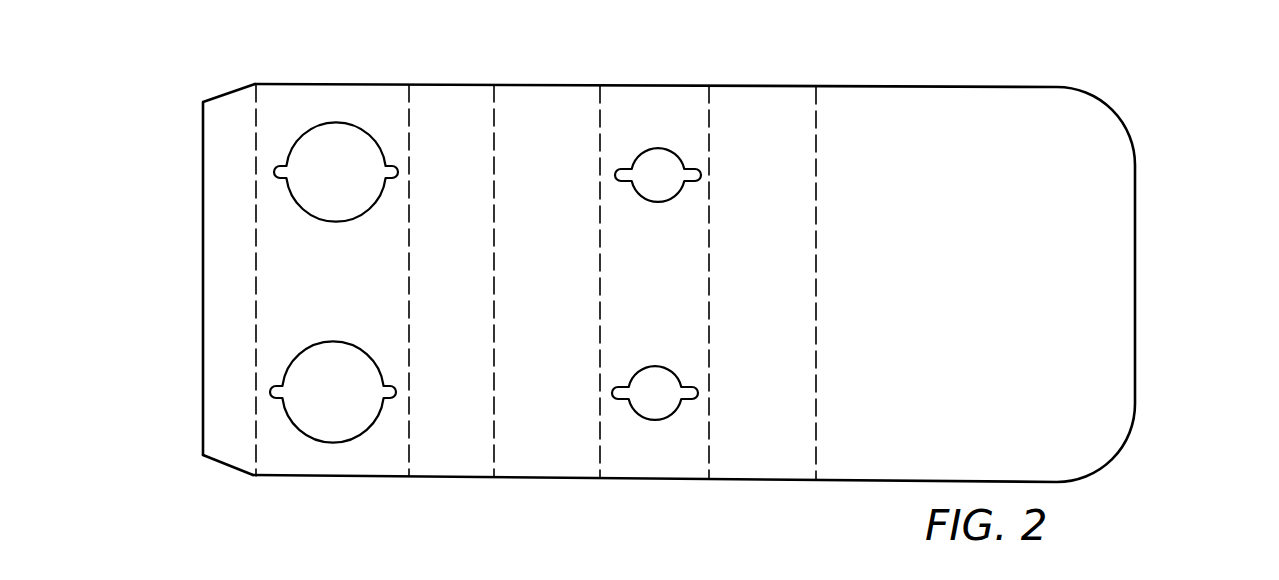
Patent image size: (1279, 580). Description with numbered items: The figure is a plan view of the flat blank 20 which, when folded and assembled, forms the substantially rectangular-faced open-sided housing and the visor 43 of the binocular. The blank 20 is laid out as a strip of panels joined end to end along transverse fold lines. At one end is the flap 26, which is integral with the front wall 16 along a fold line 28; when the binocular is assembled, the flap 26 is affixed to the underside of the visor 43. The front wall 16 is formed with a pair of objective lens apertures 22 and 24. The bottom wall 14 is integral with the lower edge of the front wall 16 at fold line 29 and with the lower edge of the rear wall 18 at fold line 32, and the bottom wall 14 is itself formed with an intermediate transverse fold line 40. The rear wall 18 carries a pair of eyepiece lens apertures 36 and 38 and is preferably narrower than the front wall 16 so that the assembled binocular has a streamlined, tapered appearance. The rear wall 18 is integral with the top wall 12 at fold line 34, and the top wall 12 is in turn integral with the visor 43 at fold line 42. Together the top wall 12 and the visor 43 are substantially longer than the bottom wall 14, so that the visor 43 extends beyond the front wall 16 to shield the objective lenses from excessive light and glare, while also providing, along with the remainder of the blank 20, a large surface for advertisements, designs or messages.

The top wall 12 is at (787, 468).
The bottom wall 14 is at (527, 110).
The front wall 16 is at (270, 226).
The rear wall 18 is at (625, 468).
The blank 20 is at (1143, 250).
The objective lens aperture 22 is at (350, 210).
The objective lens aperture 24 is at (343, 358).
The flap 26 is at (222, 328).
The fold line 28 is at (253, 424).
The fold line 29 is at (411, 130).
The fold line 32 is at (599, 262).
The fold line 34 is at (711, 258).
The eyepiece lens aperture 36 is at (660, 158).
The eyepiece lens aperture 38 is at (655, 380).
The intermediate transverse fold line 40 is at (493, 325).
The fold line 42 is at (815, 325).
The visor 43 is at (1120, 375).